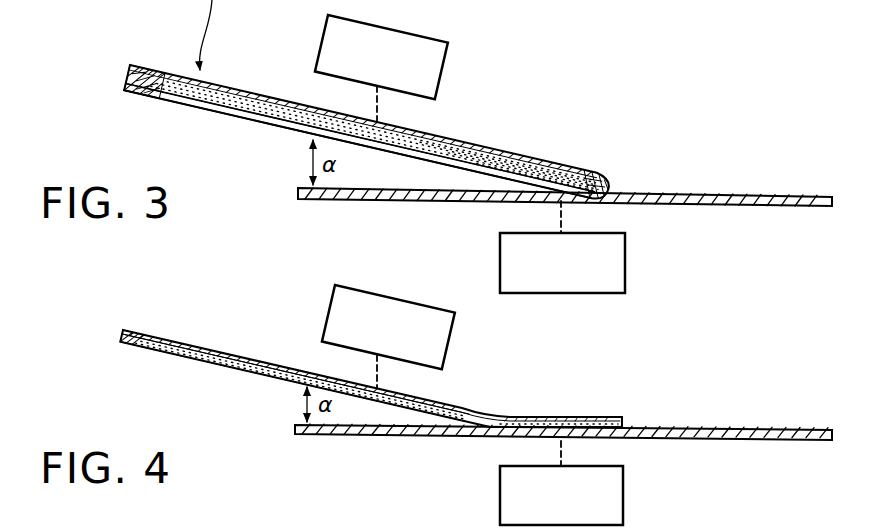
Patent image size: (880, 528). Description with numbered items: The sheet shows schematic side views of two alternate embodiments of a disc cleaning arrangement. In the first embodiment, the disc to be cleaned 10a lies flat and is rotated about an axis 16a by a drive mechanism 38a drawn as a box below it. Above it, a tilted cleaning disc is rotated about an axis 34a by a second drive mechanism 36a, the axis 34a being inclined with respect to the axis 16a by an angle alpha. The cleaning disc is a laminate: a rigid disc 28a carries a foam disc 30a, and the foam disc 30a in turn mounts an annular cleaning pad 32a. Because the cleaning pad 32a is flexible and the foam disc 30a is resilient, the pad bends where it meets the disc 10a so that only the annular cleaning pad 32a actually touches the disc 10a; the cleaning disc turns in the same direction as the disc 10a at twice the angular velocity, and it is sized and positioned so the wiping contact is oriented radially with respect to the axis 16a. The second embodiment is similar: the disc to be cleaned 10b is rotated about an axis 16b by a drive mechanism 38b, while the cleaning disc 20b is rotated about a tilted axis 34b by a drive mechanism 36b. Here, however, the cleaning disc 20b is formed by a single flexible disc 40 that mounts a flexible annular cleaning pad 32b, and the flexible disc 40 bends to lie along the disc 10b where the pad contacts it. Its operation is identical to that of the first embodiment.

In FIG. 3, the disc to be cleaned 10a is at (722, 195).
In FIG. 3, the axis 16a is at (563, 222).
In FIG. 3, the rigid disc 28a is at (461, 140).
In FIG. 3, the foam disc 30a is at (130, 78).
In FIG. 3, the annular cleaning pad 32a is at (503, 173).
In FIG. 3, the axis 34a is at (376, 97).
In FIG. 3, the drive mechanism 36a is at (447, 68).
In FIG. 3, the drive mechanism 38a is at (625, 263).
In FIG. 4, the disc to be cleaned 10b is at (727, 428).
In FIG. 4, the axis 16b is at (563, 453).
In FIG. 4, the cleaning disc 20b is at (514, 410).
In FIG. 4, the annular cleaning pad 32b is at (135, 344).
In FIG. 4, the axis 34b is at (376, 370).
In FIG. 4, the drive mechanism 36b is at (330, 311).
In FIG. 4, the drive mechanism 38b is at (623, 503).
In FIG. 4, the flexible disc 40 is at (197, 347).